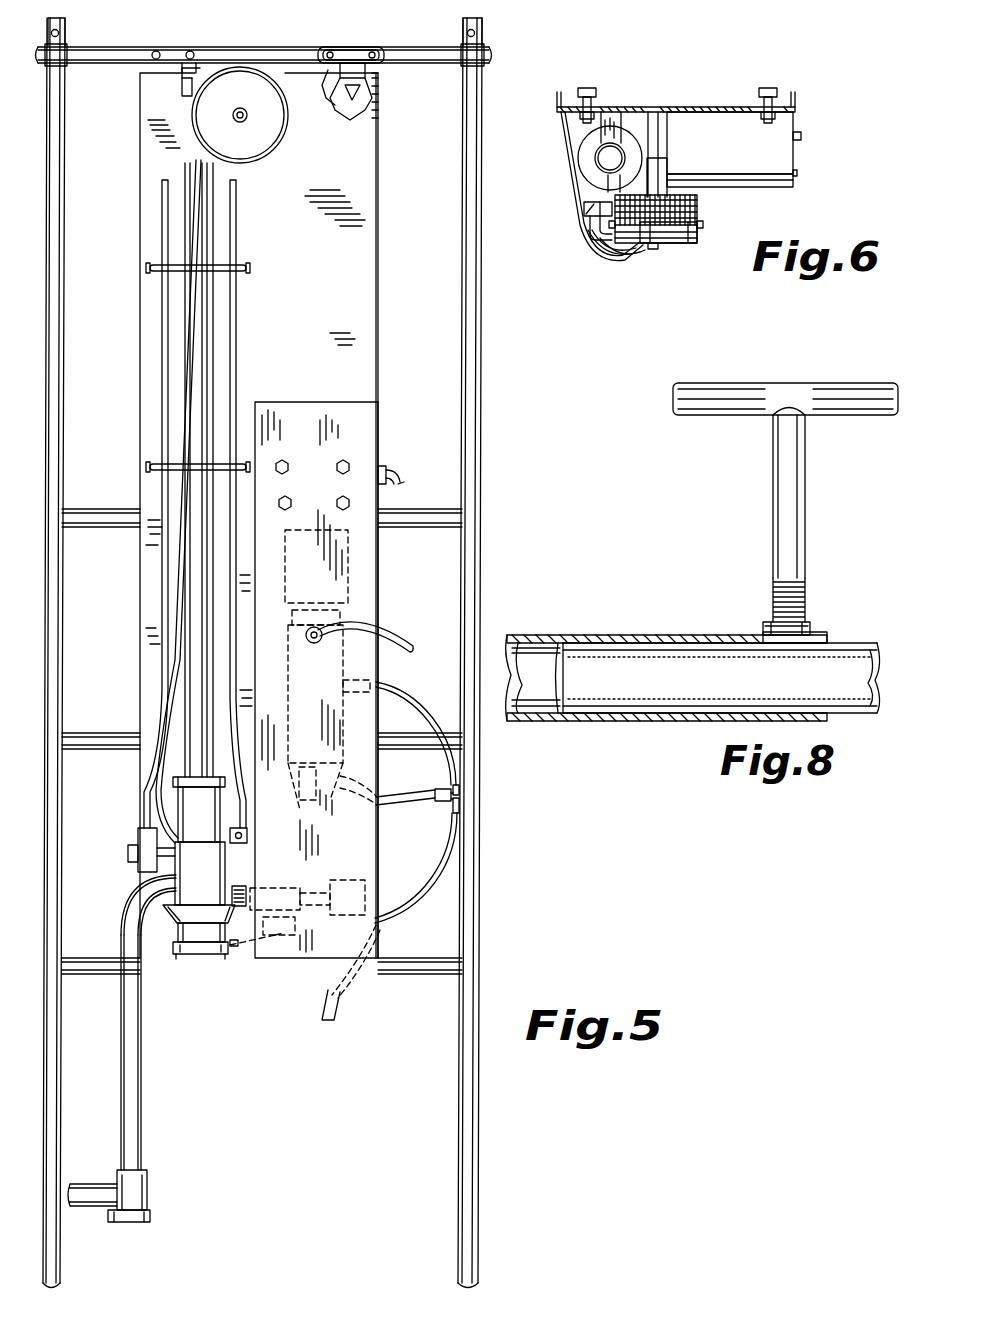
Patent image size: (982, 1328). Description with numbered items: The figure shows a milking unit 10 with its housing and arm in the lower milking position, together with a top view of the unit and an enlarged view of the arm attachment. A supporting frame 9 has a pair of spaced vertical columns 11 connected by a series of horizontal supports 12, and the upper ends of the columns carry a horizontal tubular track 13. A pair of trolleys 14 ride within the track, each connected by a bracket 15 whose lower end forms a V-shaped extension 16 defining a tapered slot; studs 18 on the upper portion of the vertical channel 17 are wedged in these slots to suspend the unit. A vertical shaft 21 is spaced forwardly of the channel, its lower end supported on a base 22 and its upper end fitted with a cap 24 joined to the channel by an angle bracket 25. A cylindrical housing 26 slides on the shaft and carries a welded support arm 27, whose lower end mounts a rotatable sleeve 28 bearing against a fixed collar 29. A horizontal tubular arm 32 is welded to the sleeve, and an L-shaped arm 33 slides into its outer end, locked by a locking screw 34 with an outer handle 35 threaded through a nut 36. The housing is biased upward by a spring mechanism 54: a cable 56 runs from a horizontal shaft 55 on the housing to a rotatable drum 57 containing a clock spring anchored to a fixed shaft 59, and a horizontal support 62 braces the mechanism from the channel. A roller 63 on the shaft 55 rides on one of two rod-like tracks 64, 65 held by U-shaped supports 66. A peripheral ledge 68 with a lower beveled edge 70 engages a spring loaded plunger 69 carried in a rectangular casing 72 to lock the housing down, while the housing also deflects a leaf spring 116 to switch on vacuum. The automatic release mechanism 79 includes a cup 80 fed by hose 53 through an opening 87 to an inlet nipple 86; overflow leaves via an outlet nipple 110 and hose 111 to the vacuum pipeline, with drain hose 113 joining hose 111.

In FIG. 5, the supporting frame 9 is at (493, 518).
In FIG. 5, the milking unit 10 is at (391, 328).
In FIG. 5, the vertical column 11 is at (62, 400).
In FIG. 5, the horizontal support 12 is at (433, 508).
In FIG. 5, the horizontal tubular track 13 is at (420, 47).
In FIG. 5, the trolley 14 is at (165, 50).
In FIG. 5, the bracket 15 is at (185, 62).
In FIG. 5, the V-shaped extension 16 is at (352, 122).
In FIG. 6, the V-shaped extension 16 is at (594, 100).
In FIG. 5, the vertical channel 17 is at (370, 253).
In FIG. 6, the vertical channel 17 is at (716, 106).
In FIG. 5, the stud 18 is at (330, 98).
In FIG. 6, the stud 18 is at (588, 87).
In FIG. 5, the vertical shaft 21 is at (209, 320).
In FIG. 5, the base 22 is at (200, 955).
In FIG. 5, the cap 24 is at (180, 86).
In FIG. 6, the cap 24 is at (605, 157).
In FIG. 6, the angle bracket 25 is at (615, 112).
In FIG. 5, the cylindrical housing 26 is at (176, 940).
In FIG. 6, the cylindrical housing 26 is at (580, 178).
In FIG. 5, the support arm 27 is at (120, 1060).
In FIG. 5, the sleeve 28 is at (147, 1178).
In FIG. 5, the fixed collar 29 is at (150, 1210).
In FIG. 5, the horizontal tubular arm 32 is at (90, 1185).
In FIG. 8, the horizontal tubular arm 32 is at (647, 635).
In FIG. 8, the L-shaped arm 33 is at (845, 643).
In FIG. 8, the locking screw 34 is at (775, 478).
In FIG. 8, the outer handle 35 is at (768, 383).
In FIG. 8, the nut 36 is at (760, 620).
In FIG. 5, the hose 53 is at (400, 632).
In FIG. 5, the spring mechanism 54 is at (293, 147).
In FIG. 6, the spring mechanism 54 is at (684, 253).
In FIG. 5, the horizontal shaft 55 is at (200, 868).
In FIG. 5, the cable 56 is at (176, 550).
In FIG. 6, the cable 56 is at (697, 205).
In FIG. 6, the rotatable drum 57 is at (668, 200).
In FIG. 5, the fixed shaft 59 is at (238, 110).
In FIG. 6, the fixed shaft 59 is at (652, 250).
In FIG. 6, the horizontal support 62 is at (652, 135).
In FIG. 5, the roller 63 is at (138, 868).
In FIG. 6, the roller 63 is at (590, 222).
In FIG. 5, the rod-like track 64 is at (160, 368).
In FIG. 6, the rod-like track 64 is at (584, 209).
In FIG. 5, the rod-like track 65 is at (238, 365).
In FIG. 5, the U-shaped support 66 is at (225, 268).
In FIG. 6, the U-shaped support 66 is at (590, 258).
In FIG. 5, the peripheral ledge 68 is at (165, 898).
In FIG. 5, the spring loaded plunger 69 is at (233, 895).
In FIG. 5, the lower beveled edge 70 is at (170, 912).
In FIG. 5, the rectangular casing 72 is at (363, 425).
In FIG. 6, the rectangular casing 72 is at (785, 157).
In FIG. 5, the automatic release mechanism 79 is at (283, 713).
In FIG. 5, the cup 80 is at (305, 755).
In FIG. 5, the inlet nipple 86 is at (305, 638).
In FIG. 5, the opening 87 is at (313, 625).
In FIG. 5, the outlet nipple 110 is at (372, 675).
In FIG. 5, the hose 111 is at (432, 718).
In FIG. 5, the hose 113 is at (420, 808).
In FIG. 5, the leaf spring 116 is at (240, 950).